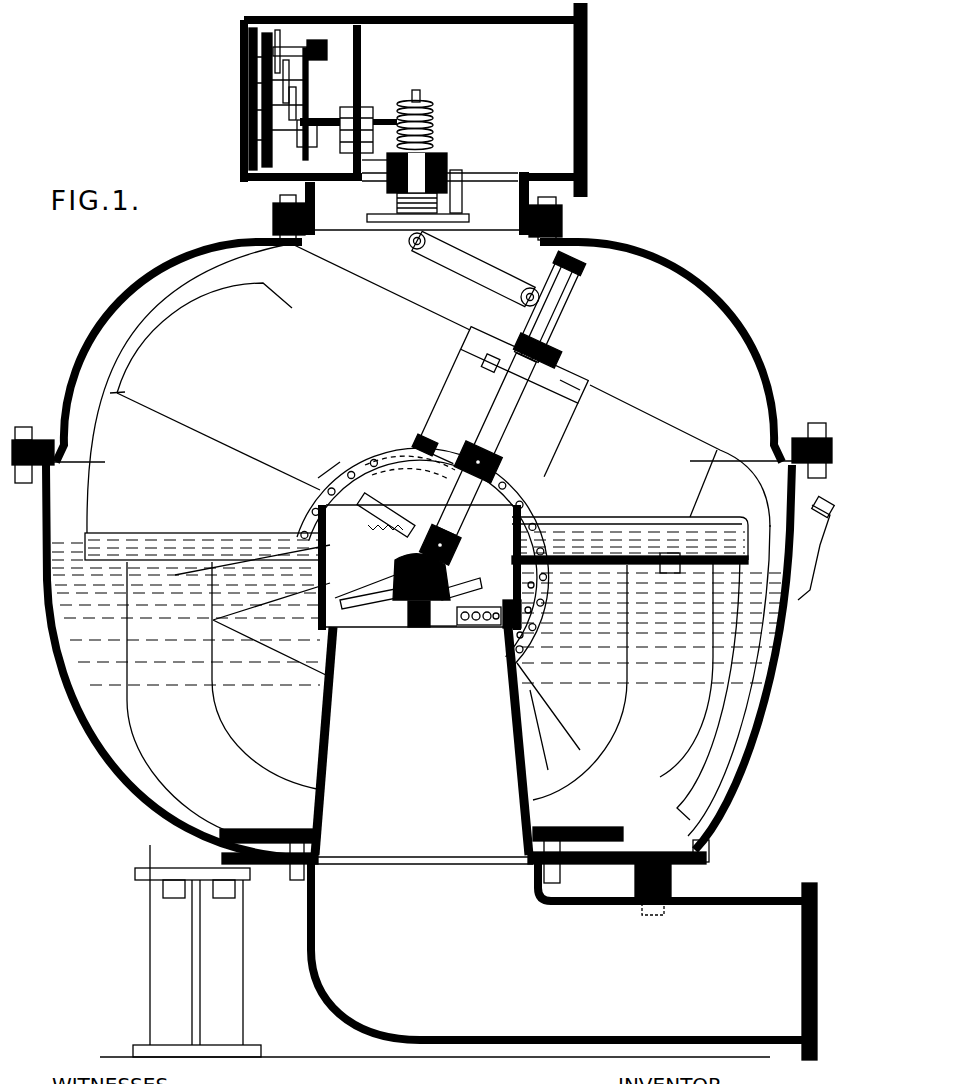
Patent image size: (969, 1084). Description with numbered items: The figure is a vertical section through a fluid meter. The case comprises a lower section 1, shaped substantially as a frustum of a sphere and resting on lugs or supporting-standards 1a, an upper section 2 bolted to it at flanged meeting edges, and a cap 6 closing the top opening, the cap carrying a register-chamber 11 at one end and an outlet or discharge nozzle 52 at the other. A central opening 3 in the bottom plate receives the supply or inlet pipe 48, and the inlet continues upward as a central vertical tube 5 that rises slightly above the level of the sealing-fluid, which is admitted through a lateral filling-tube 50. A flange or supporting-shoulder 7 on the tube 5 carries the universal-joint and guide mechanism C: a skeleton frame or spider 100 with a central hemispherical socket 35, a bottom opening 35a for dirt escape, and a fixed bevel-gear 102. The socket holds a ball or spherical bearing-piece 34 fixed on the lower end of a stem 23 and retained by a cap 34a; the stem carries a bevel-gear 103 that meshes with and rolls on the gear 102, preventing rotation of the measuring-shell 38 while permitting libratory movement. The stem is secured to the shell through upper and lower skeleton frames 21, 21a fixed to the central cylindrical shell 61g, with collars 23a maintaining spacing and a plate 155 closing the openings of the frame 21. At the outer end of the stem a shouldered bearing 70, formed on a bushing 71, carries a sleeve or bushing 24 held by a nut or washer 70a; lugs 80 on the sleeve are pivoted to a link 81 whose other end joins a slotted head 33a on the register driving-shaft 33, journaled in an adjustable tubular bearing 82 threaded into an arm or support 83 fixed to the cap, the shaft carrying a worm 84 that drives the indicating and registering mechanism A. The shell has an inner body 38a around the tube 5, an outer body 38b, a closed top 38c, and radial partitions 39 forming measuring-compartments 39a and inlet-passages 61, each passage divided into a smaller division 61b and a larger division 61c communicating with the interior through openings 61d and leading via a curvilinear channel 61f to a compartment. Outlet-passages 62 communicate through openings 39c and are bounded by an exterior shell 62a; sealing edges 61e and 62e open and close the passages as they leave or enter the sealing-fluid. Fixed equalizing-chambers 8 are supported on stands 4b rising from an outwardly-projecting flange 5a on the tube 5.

The lower section 1 is at (419, 690).
The lugs or supporting-standards 1a is at (435, 951).
The upper section 2 is at (419, 346).
The central opening 3 is at (385, 866).
The stands 4b is at (420, 696).
The central vertical tube 5 is at (422, 727).
The outwardly-projecting flange 5a is at (285, 841).
The cap 6 is at (414, 121).
The flange or supporting-shoulder 7 is at (335, 630).
The equalizing-chambers 8 is at (630, 545).
The register-chamber 11 is at (295, 98).
The upper skeleton frame 21 is at (495, 352).
The lower skeleton frame 21a is at (500, 462).
The stem 23 is at (490, 428).
The collars 23a is at (548, 370).
The sleeve or bushing 24 is at (565, 321).
The register driving-shaft 33 is at (450, 167).
The slotted head 33a is at (413, 235).
The ball or spherical bearing-piece 34 is at (411, 598).
The cap 34a is at (402, 577).
The central hemispherical socket 35 is at (435, 612).
The bottom opening 35a is at (420, 630).
The measuring-shell 38 is at (422, 440).
The inner body 38a is at (560, 617).
The outer body 38b is at (160, 376).
The closed top 38c is at (425, 412).
The radial partitions 39 is at (419, 651).
The measuring-compartments 39a is at (580, 682).
The openings 39c is at (700, 515).
The supply or inlet pipe 48 is at (677, 959).
The lateral filling-tube 50 is at (816, 548).
The outlet or discharge nozzle 52 is at (567, 90).
The inlet-passages 61 is at (530, 497).
The smaller division 61b is at (280, 395).
The larger division 61c is at (225, 490).
The openings 61d is at (330, 461).
The sealing edges 61e is at (165, 402).
The channel 61f is at (518, 374).
The central cylindrical shell 61g is at (448, 370).
The outlet-passages 62 is at (205, 318).
The exterior shell 62a is at (760, 770).
The sealing edges 62e is at (98, 395).
The shouldered bearing 70 is at (535, 340).
The nut or washer 70a is at (585, 267).
The bushing 71 is at (497, 373).
The lugs 80 is at (533, 281).
The link 81 is at (472, 270).
The adjustable tubular bearing 82 is at (397, 203).
The arm or support 83 is at (372, 175).
The worm 84 is at (434, 122).
The skeleton frame or spider 100 is at (470, 628).
The bevel-gear 102 is at (356, 588).
The bevel-gear 103 is at (368, 515).
The plate 155 is at (570, 380).
The indicating and registering mechanism A is at (262, 100).
The universal-joint and guide mechanism C is at (362, 553).